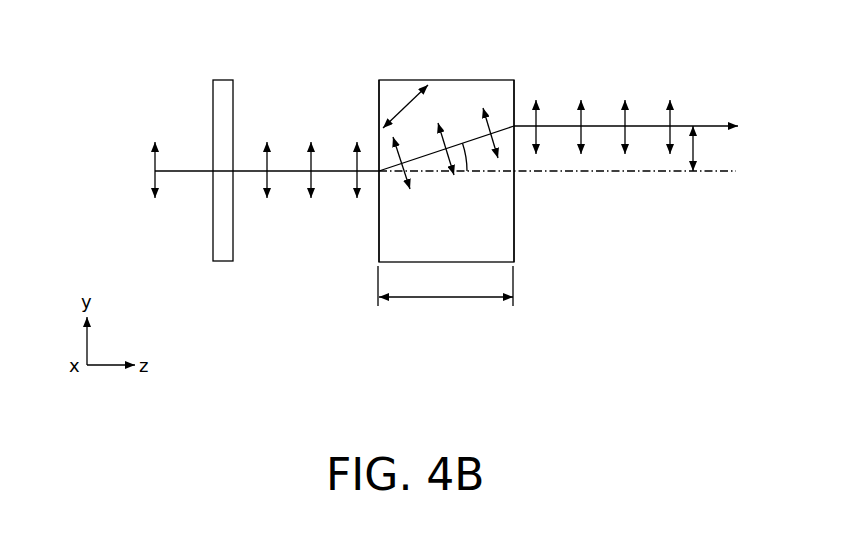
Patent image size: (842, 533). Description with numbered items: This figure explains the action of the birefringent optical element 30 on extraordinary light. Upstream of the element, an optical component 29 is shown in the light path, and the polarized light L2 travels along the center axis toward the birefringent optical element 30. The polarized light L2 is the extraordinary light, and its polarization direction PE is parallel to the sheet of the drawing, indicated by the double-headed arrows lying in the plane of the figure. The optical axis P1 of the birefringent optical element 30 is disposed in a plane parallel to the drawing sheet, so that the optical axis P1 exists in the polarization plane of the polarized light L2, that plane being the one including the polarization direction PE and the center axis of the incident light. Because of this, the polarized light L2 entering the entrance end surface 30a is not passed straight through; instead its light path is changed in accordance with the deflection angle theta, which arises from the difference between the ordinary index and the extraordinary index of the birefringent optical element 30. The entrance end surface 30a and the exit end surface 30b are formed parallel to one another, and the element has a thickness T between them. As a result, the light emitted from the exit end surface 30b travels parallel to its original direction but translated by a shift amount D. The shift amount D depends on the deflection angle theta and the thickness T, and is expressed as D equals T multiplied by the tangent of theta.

The wave plate 29 is at (221, 80).
The birefringent optical element 30 is at (474, 80).
The entrance end surface 30a is at (378, 226).
The exit end surface 30b is at (514, 226).
The polarized light L2 is at (247, 170).
The polarization direction PE is at (303, 141).
The optical axis P1 is at (400, 100).
The deflection angle theta is at (474, 156).
The shift amount D is at (705, 148).
The thickness T is at (445, 298).